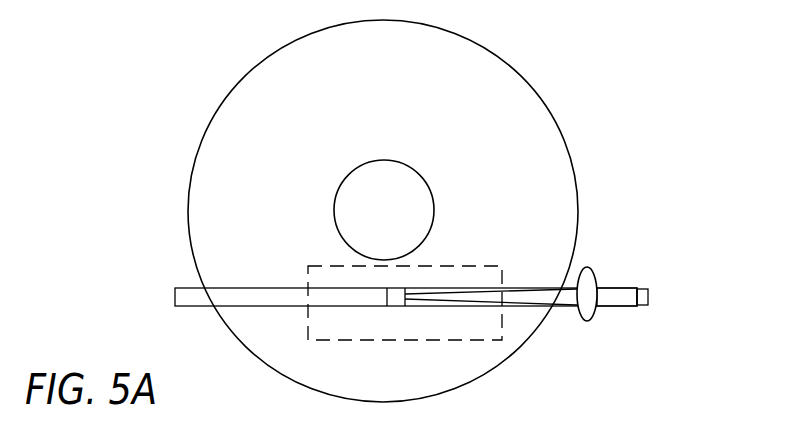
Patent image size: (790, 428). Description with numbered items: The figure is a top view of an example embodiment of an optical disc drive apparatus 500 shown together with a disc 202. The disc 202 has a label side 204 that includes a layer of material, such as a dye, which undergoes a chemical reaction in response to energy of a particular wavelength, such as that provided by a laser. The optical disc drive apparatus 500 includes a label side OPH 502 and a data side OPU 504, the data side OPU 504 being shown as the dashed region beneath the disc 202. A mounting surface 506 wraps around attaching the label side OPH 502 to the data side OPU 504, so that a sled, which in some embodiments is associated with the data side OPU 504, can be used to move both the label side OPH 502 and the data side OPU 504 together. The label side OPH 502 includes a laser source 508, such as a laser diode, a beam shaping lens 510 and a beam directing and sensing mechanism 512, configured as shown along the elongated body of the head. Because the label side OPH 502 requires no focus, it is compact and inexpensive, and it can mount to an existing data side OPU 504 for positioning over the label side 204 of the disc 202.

The optical disc drive apparatus 500 is at (212, 52).
The disc 202 is at (478, 43).
The label side 204 is at (507, 100).
The data side OPU 504 is at (490, 244).
The label side OPH 502 is at (462, 306).
The mounting surface 506 is at (648, 298).
The laser source 508 is at (622, 307).
The beam shaping lens 510 is at (585, 322).
The beam directing and sensing mechanism 512 is at (402, 319).